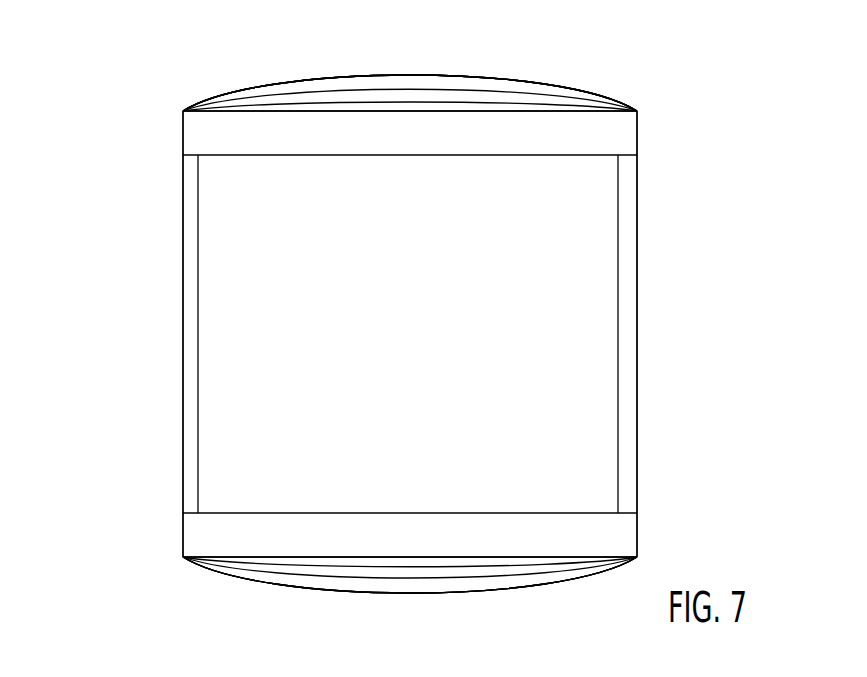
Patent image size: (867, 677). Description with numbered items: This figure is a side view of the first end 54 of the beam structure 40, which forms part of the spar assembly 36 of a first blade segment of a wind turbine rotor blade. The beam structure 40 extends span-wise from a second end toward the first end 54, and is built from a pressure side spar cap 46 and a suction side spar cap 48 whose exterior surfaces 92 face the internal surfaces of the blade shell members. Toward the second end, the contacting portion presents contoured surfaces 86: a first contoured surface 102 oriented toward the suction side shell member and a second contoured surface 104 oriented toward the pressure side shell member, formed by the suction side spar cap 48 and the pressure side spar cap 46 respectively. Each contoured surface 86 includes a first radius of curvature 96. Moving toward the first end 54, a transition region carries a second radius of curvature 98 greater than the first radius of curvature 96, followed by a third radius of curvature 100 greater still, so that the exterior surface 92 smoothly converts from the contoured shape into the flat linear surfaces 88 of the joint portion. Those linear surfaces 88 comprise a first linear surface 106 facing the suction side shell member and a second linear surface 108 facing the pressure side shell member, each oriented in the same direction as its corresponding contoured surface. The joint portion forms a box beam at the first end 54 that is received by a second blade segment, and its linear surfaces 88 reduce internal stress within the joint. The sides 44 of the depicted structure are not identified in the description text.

The spar assembly 36 is at (113, 51).
The beam structure 40 is at (653, 46).
The side wall 44 is at (209, 388).
The pressure side spar cap 46 is at (402, 526).
The suction side spar cap 48 is at (480, 148).
The first end 54 is at (80, 426).
The contoured surface 86 is at (478, 77).
The linear surface 88 is at (362, 114).
The exterior surface 92 is at (423, 78).
The first radius of curvature 96 is at (355, 77).
The second radius of curvature 98 is at (323, 92).
The third radius of curvature 100 is at (248, 108).
The first contoured surface 102 is at (535, 80).
The second contoured surface 104 is at (423, 595).
The first linear surface 106 is at (533, 115).
The second linear surface 108 is at (498, 556).